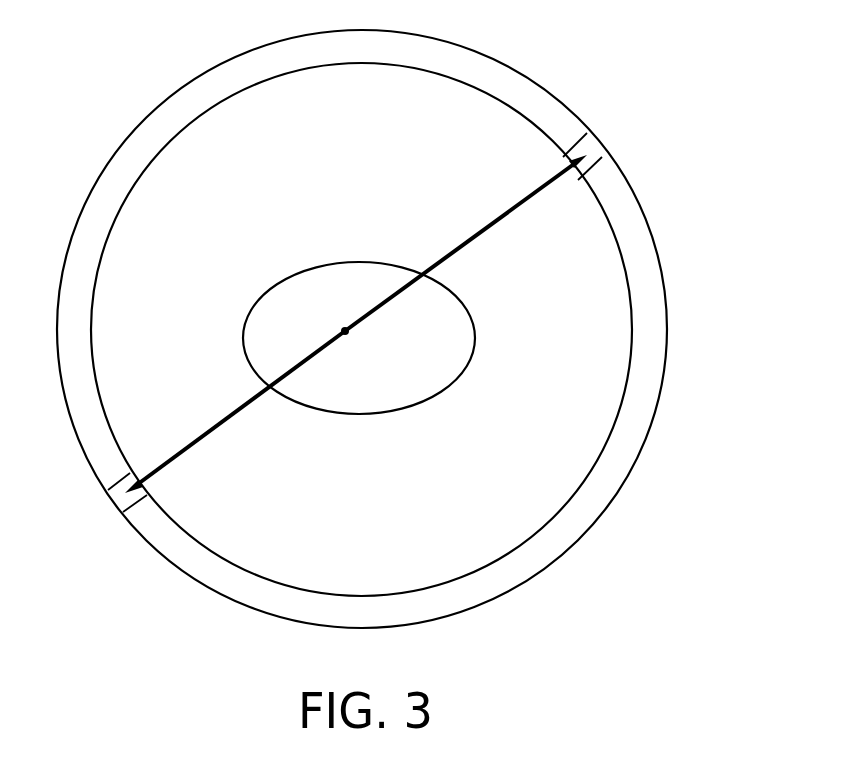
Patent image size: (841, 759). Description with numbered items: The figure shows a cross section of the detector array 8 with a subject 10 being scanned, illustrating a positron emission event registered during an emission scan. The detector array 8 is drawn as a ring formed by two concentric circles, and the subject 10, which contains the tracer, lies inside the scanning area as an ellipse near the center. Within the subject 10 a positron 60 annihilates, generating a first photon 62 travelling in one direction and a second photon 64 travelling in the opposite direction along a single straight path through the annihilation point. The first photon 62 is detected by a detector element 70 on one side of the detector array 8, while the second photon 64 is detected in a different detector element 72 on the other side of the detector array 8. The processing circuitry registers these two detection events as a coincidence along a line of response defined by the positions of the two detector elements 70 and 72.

The detector array 8 is at (667, 305).
The subject 10 is at (435, 395).
The positron 60 is at (350, 334).
The first photon 62 is at (497, 217).
The second photon 64 is at (207, 432).
The detector element 70 is at (595, 147).
The detector element 72 is at (120, 500).